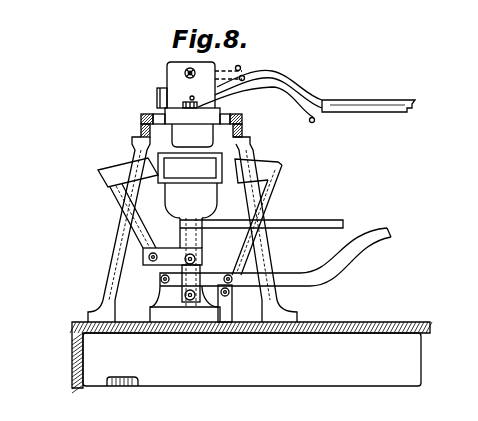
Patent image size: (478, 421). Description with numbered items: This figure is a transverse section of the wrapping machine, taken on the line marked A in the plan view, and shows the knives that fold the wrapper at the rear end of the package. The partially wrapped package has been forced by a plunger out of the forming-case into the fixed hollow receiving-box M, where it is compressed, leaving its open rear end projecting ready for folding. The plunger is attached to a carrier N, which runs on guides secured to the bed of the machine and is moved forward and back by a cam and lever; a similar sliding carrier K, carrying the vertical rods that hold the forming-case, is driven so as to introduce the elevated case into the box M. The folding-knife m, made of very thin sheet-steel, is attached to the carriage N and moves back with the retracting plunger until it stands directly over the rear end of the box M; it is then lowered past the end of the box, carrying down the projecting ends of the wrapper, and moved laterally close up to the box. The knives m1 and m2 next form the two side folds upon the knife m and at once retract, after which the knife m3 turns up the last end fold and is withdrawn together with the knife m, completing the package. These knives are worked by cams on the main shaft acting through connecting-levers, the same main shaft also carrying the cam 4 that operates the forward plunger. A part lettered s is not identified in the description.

The section line A is at (251, 357).
The carrier K is at (187, 121).
The carrier N is at (192, 127).
The receiving-box M is at (190, 168).
The folding-knife m is at (186, 85).
The folding-knife m1 is at (128, 203).
The folding-knife m2 is at (257, 217).
The folding-knife m3 is at (191, 200).
The spindle / guide line s is at (232, 70).
The cam 4 is at (367, 106).